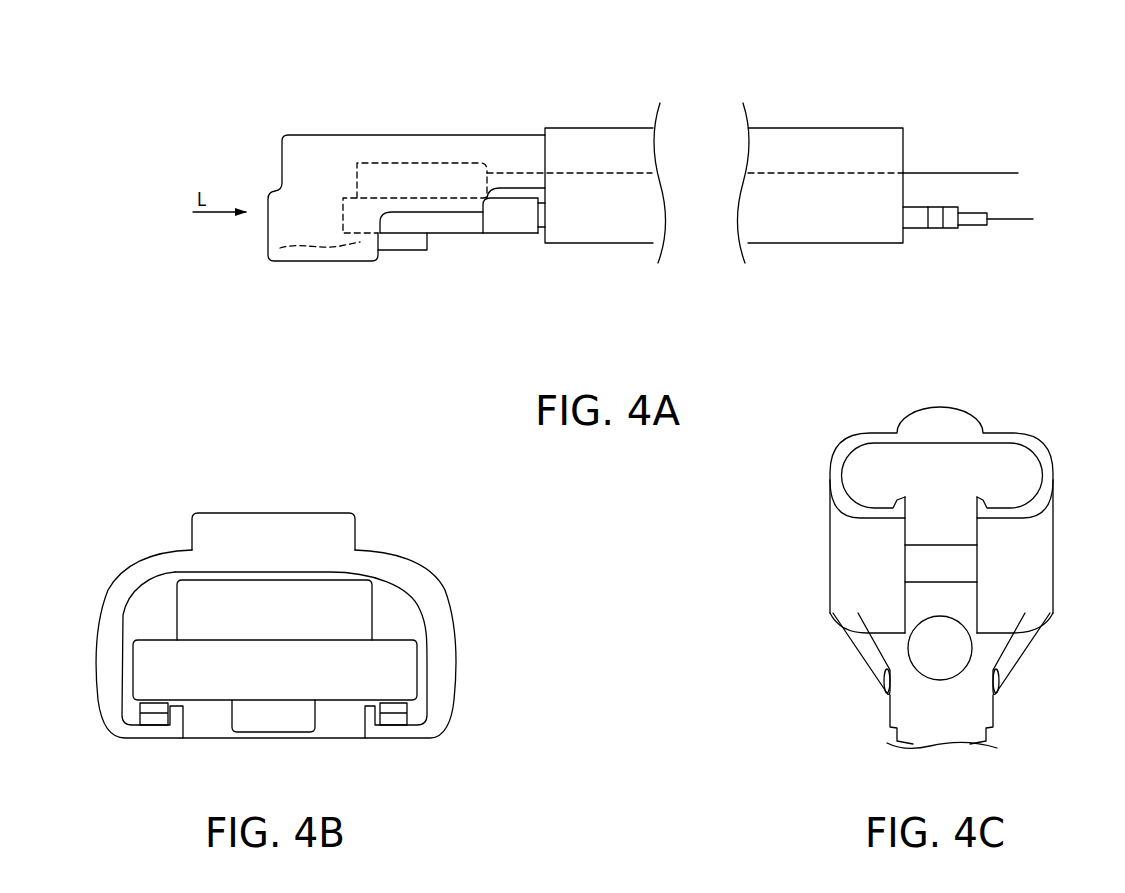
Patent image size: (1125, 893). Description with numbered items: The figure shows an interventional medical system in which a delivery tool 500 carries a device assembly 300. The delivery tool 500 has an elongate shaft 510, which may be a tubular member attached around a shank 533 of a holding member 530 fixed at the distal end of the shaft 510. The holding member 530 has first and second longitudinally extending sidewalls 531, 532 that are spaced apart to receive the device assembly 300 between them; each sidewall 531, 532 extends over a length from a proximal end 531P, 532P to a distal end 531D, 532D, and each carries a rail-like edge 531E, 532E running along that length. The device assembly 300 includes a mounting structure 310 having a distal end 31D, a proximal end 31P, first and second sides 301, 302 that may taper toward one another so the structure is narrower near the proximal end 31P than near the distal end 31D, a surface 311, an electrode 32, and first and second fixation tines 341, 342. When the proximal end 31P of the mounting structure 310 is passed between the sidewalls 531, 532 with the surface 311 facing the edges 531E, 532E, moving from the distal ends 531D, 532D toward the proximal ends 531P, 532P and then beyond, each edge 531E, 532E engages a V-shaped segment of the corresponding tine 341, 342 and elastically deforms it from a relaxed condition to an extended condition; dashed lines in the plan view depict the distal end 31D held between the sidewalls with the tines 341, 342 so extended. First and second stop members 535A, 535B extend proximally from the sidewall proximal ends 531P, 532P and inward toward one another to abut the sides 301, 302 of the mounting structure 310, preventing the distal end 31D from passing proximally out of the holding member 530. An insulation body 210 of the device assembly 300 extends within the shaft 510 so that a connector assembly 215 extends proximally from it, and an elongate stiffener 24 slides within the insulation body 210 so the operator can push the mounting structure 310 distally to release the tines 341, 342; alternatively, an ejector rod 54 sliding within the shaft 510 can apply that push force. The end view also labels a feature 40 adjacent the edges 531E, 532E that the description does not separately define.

In FIG. 4A, the delivery tool 500 is at (283, 94).
In FIG. 4B, the delivery tool 500 is at (160, 478).
In FIG. 4A, the holding member 530 is at (407, 132).
In FIG. 4B, the holding member 530 is at (287, 504).
In FIG. 4C, the holding member 530 is at (805, 439).
In FIG. 4A, the first longitudinally extending sidewall 531 is at (321, 210).
In FIG. 4B, the first longitudinally extending sidewall 531 is at (105, 665).
In FIG. 4C, the first longitudinally extending sidewall 531 is at (862, 553).
In FIG. 4B, the second longitudinally extending sidewall 532 is at (442, 650).
In FIG. 4C, the second longitudinally extending sidewall 532 is at (1045, 560).
In FIG. 4A, the shank 533 is at (522, 148).
In FIG. 4A, the distal end of first sidewall 531D is at (265, 232).
In FIG. 4C, the distal end of first sidewall 531D is at (833, 472).
In FIG. 4C, the distal end of second sidewall 532D is at (1047, 478).
In FIG. 4A, the proximal end of first sidewall 531P is at (380, 259).
In FIG. 4C, the proximal end of first sidewall 531P is at (845, 590).
In FIG. 4C, the proximal end of second sidewall 532P is at (1040, 590).
In FIG. 4B, the rail-like edge of first sidewall 531E is at (150, 733).
In FIG. 4C, the rail-like edge of first sidewall 531E is at (907, 498).
In FIG. 4B, the rail-like edge of second sidewall 532E is at (408, 716).
In FIG. 4C, the rail-like edge of second sidewall 532E is at (990, 498).
In FIG. 4A, the first stop member 535A is at (443, 203).
In FIG. 4C, the first stop member 535A is at (845, 643).
In FIG. 4C, the second stop member 535B is at (1035, 647).
In FIG. 4A, the elongate shaft 510 is at (605, 136).
In FIG. 4A, the ejector rod 54 is at (950, 156).
In FIG. 4A, the insulation body 210 is at (918, 244).
In FIG. 4A, the connector assembly 215 is at (928, 243).
In FIG. 4A, the elongate stiffener 24 is at (1000, 224).
In FIG. 4A, the device assembly 300 is at (482, 323).
In FIG. 4B, the device assembly 300 is at (327, 734).
In FIG. 4A, the mounting structure 310 is at (507, 259).
In FIG. 4C, the mounting structure 310 is at (889, 701).
In FIG. 4A, the surface 311 is at (448, 233).
In FIG. 4B, the surface 311 is at (203, 703).
In FIG. 4C, the surface 311 is at (948, 608).
In FIG. 4B, the distal end of mounting structure 31D is at (285, 675).
In FIG. 4C, the distal end of mounting structure 31D is at (950, 573).
In FIG. 4A, the proximal end of mounting structure 31P is at (531, 229).
In FIG. 4C, the first side of mounting structure 301 is at (870, 648).
In FIG. 4A, the second side of mounting structure 302 is at (513, 228).
In FIG. 4C, the second side of mounting structure 302 is at (1003, 677).
In FIG. 4A, the electrode 32 is at (395, 247).
In FIG. 4B, the electrode 32 is at (265, 723).
In FIG. 4C, the electrode 32 is at (943, 680).
In FIG. 4B, the retention tab 40 is at (147, 718).
In FIG. 4B, the first fixation tine 341 is at (125, 707).
In FIG. 4B, the second fixation tine 342 is at (433, 708).